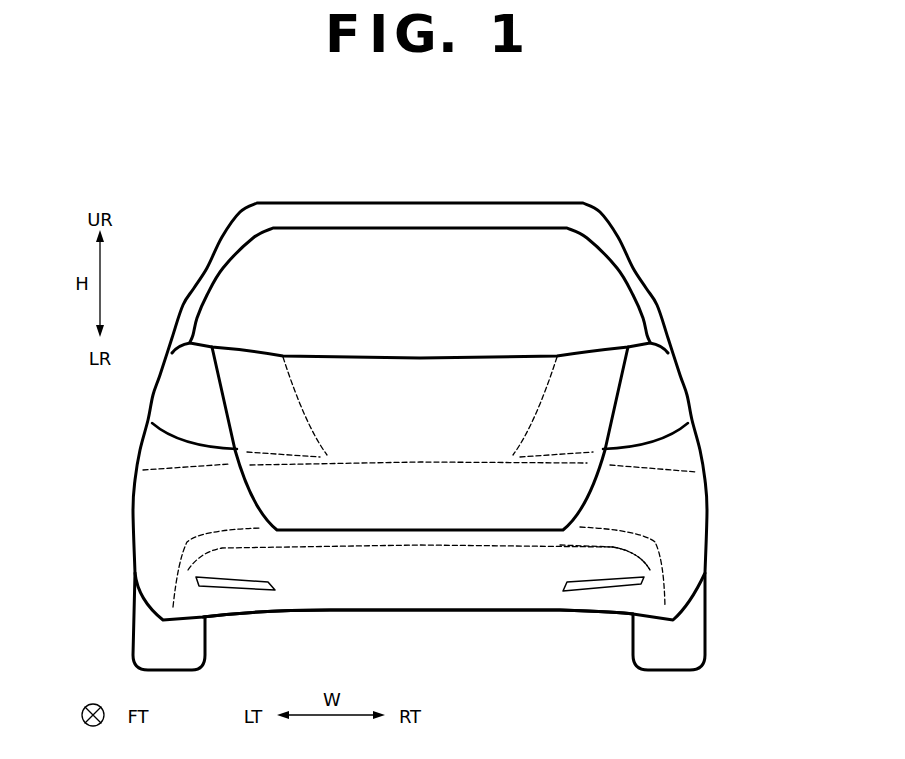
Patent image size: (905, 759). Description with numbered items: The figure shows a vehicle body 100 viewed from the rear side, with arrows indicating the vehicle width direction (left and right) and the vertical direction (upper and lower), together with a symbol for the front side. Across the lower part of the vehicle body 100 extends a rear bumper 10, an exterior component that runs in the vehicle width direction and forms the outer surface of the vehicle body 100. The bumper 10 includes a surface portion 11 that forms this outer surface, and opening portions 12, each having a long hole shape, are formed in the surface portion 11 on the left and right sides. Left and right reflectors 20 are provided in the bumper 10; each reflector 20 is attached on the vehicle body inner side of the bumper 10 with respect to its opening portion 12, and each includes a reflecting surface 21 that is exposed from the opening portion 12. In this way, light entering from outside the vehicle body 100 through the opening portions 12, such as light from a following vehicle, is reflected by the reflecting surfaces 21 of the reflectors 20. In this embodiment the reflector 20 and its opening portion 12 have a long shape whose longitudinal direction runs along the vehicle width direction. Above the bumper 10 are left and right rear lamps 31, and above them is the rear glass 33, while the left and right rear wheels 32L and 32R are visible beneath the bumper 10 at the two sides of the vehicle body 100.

The vehicle body 100 is at (227, 197).
The rear bumper 10 is at (692, 508).
The surface portion 11 is at (443, 595).
The opening portion 12 is at (568, 592).
The reflector 20 is at (605, 628).
The reflecting surface 21 is at (608, 584).
The rear lamp 31 is at (165, 412).
The left rear wheel 32L is at (147, 643).
The right rear wheel 32R is at (690, 638).
The rear glass 33 is at (593, 318).